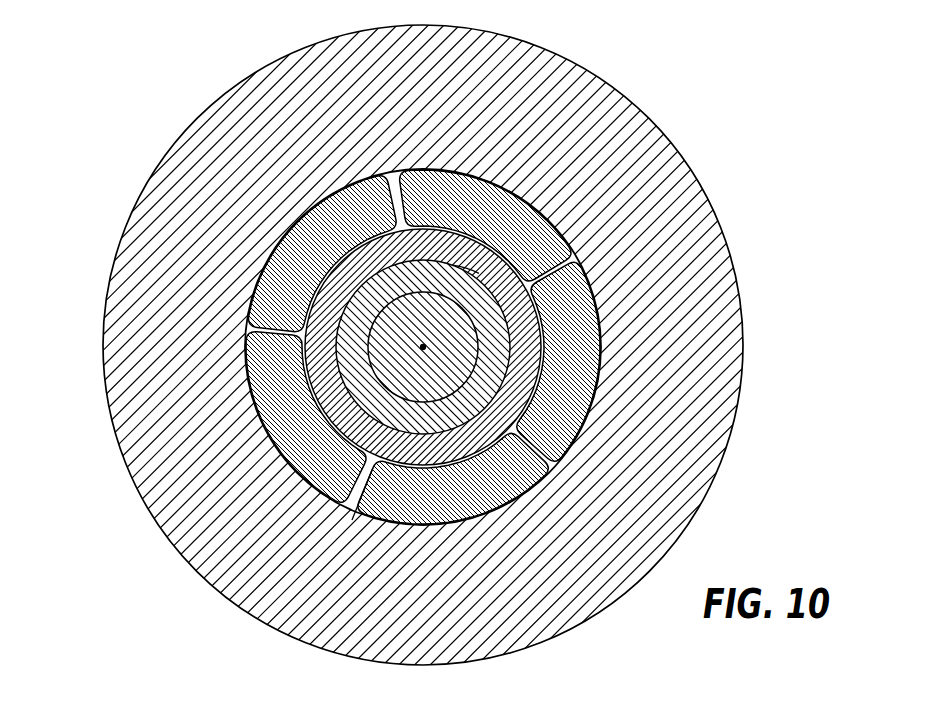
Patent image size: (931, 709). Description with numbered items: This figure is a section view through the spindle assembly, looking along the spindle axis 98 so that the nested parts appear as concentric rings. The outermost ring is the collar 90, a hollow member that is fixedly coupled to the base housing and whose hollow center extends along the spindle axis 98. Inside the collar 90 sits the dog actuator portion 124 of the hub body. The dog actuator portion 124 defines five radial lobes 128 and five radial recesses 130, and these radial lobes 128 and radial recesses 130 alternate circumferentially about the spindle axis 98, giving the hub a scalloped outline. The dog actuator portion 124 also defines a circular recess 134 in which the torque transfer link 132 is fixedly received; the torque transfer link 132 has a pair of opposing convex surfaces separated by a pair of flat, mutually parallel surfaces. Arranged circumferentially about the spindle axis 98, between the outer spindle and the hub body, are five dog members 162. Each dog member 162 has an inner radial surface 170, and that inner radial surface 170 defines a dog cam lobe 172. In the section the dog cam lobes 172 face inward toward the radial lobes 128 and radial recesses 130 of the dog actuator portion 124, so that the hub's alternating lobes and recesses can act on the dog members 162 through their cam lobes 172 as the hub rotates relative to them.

The collar 90 is at (660, 245).
The spindle axis 98 is at (423, 347).
The dog actuator portion 124 is at (464, 285).
The radial lobes 128 is at (395, 182).
The radial recesses 130 is at (287, 230).
The torque transfer link 132 is at (480, 326).
The circular recess 134 is at (542, 197).
The dog members 162 is at (573, 243).
The inner radial surface 170 is at (345, 487).
The dog cam lobe 172 is at (300, 449).